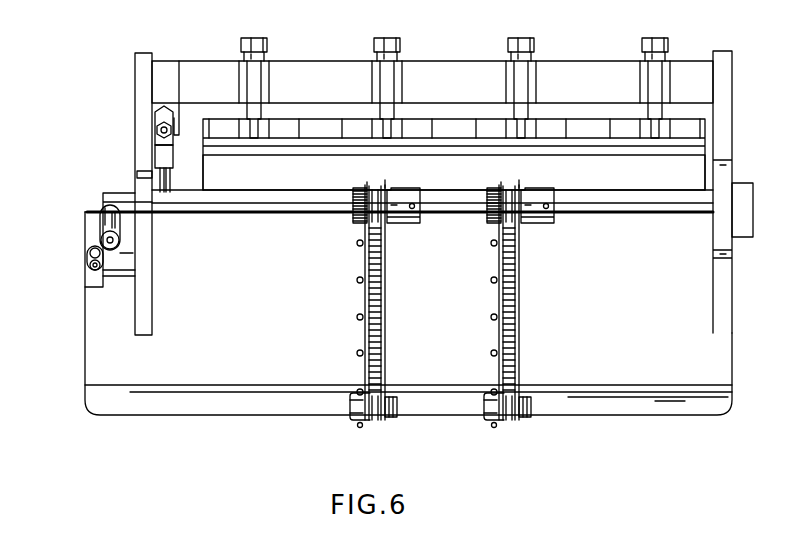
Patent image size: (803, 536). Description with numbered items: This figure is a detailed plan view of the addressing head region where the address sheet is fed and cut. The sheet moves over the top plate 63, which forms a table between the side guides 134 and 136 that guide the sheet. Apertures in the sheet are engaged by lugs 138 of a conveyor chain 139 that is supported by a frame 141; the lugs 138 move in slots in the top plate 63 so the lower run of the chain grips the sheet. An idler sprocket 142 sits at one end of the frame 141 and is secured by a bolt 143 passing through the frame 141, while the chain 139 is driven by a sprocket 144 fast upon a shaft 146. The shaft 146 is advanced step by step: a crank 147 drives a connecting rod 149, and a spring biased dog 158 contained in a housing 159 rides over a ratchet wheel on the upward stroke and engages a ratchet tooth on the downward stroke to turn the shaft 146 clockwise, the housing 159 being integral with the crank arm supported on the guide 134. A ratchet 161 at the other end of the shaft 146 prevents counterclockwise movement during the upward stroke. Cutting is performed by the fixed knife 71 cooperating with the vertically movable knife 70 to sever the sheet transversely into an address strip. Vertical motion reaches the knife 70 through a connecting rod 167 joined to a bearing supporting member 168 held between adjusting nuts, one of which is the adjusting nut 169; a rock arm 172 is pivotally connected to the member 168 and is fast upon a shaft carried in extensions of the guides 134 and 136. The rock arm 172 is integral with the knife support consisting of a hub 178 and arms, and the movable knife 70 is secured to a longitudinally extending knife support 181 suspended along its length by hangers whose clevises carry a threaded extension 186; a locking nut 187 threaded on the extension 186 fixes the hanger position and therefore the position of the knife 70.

The top plate 63 is at (603, 296).
The vertically movable knife 70 is at (356, 151).
The fixed knife 71 is at (259, 184).
The side guide 134 is at (138, 84).
The side guide 136 is at (730, 281).
The lugs 138 is at (356, 301).
The conveyor chain 139 is at (378, 300).
The frame 141 is at (392, 350).
The idler sprocket 142 is at (383, 400).
The bolt 143 is at (400, 412).
The sprocket 144 is at (385, 180).
The shaft 146 is at (334, 213).
The crank 147 is at (90, 282).
The connecting rod 149 is at (90, 262).
The spring biased dog 158 is at (90, 248).
The housing 159 is at (108, 222).
The ratchet 161 is at (743, 191).
The connecting rod 167 is at (142, 178).
The bearing supporting member 168 is at (163, 157).
The adjusting nut 169 is at (157, 137).
The rock arm 172 is at (176, 119).
The hub 178 is at (197, 70).
The knife support 181 is at (290, 137).
The threaded extension 186 is at (258, 83).
The locking nut 187 is at (266, 44).